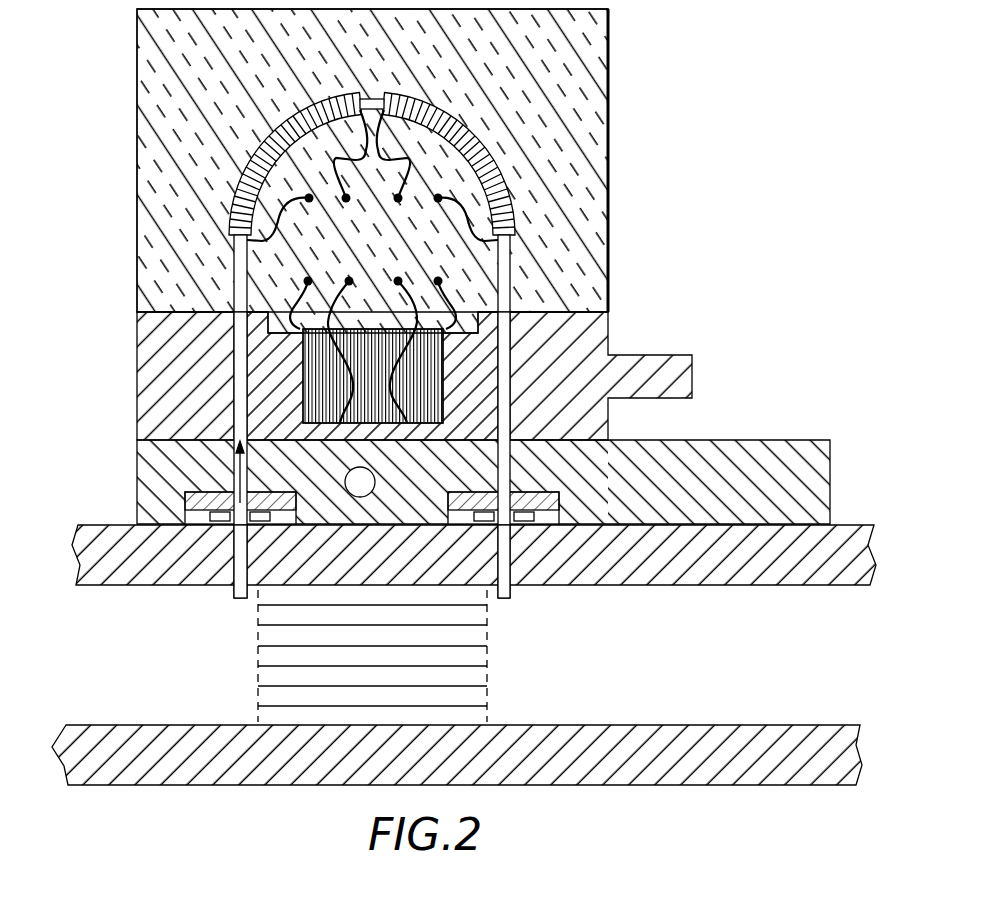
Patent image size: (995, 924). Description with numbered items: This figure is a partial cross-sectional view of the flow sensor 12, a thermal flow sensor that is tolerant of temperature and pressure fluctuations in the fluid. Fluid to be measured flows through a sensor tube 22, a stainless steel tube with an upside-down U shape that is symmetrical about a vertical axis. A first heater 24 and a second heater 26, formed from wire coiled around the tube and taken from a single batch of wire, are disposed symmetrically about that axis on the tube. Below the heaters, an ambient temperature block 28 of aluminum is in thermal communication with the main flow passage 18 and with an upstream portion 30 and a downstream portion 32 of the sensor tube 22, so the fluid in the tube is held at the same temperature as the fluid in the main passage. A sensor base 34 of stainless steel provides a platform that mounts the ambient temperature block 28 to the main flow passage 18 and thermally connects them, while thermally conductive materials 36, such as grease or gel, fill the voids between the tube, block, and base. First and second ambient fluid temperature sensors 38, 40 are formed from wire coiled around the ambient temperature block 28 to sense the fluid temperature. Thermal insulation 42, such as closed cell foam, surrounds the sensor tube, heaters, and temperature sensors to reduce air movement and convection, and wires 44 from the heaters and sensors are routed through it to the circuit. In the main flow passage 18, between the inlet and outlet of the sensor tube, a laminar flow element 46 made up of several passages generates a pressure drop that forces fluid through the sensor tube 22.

The flow sensor 12 is at (657, 75).
The main flow passage 18 is at (182, 725).
The sensor tube 22 is at (506, 258).
The first heater 24 is at (345, 98).
The second heater 26 is at (402, 97).
The ambient temperature block 28 is at (598, 332).
The upstream portion of the sensor tube 30 is at (236, 347).
The downstream portion of the sensor tube 32 is at (506, 413).
The sensor base 34 is at (758, 445).
The thermally conductive materials 36 is at (238, 475).
The first ambient fluid temperature sensor 38 is at (303, 376).
The second ambient fluid temperature sensor 40 is at (305, 390).
The thermal insulation 42 is at (601, 177).
The wires 44 is at (413, 160).
The laminar flow element 46 is at (490, 675).